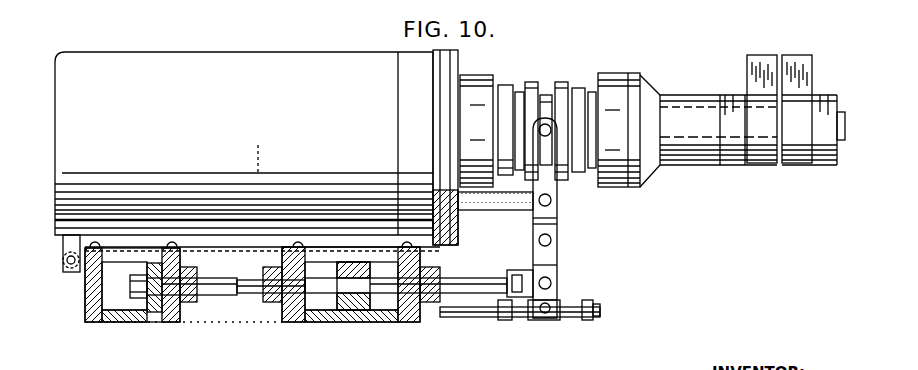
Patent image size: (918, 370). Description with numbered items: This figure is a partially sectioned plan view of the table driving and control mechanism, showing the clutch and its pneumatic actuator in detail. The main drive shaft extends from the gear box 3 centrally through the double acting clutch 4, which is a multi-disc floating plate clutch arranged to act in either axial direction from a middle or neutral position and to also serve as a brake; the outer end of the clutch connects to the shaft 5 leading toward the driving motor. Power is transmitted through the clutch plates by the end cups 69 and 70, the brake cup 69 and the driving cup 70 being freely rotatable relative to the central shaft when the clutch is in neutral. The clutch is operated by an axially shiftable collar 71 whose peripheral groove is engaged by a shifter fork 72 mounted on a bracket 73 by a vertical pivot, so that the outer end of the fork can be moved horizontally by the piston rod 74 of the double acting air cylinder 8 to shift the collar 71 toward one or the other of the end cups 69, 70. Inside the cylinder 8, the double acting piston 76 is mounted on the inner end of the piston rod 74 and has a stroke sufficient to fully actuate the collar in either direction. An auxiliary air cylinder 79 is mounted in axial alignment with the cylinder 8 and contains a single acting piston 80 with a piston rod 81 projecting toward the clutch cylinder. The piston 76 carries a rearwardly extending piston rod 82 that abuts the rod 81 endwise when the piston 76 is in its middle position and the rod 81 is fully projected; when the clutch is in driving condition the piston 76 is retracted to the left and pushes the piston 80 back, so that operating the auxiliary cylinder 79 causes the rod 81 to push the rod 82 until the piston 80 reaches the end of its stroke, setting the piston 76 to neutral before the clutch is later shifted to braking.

The gear box 3 is at (260, 133).
The double acting clutch 4 is at (546, 95).
The shaft 5 is at (690, 165).
The double acting air cylinder 8 is at (345, 314).
The brake cup 69 is at (476, 80).
The driving cup 70 is at (614, 78).
The axially shiftable collar 71 is at (531, 82).
The shifter fork 72 is at (560, 222).
The bracket 73 is at (518, 207).
The piston rod 74 is at (476, 281).
The double acting piston 76 is at (340, 270).
The auxiliary air cylinder 79 is at (121, 320).
The single acting piston 80 is at (152, 318).
The piston rod 81 is at (221, 297).
The rearwardly extending piston rod 82 is at (254, 296).